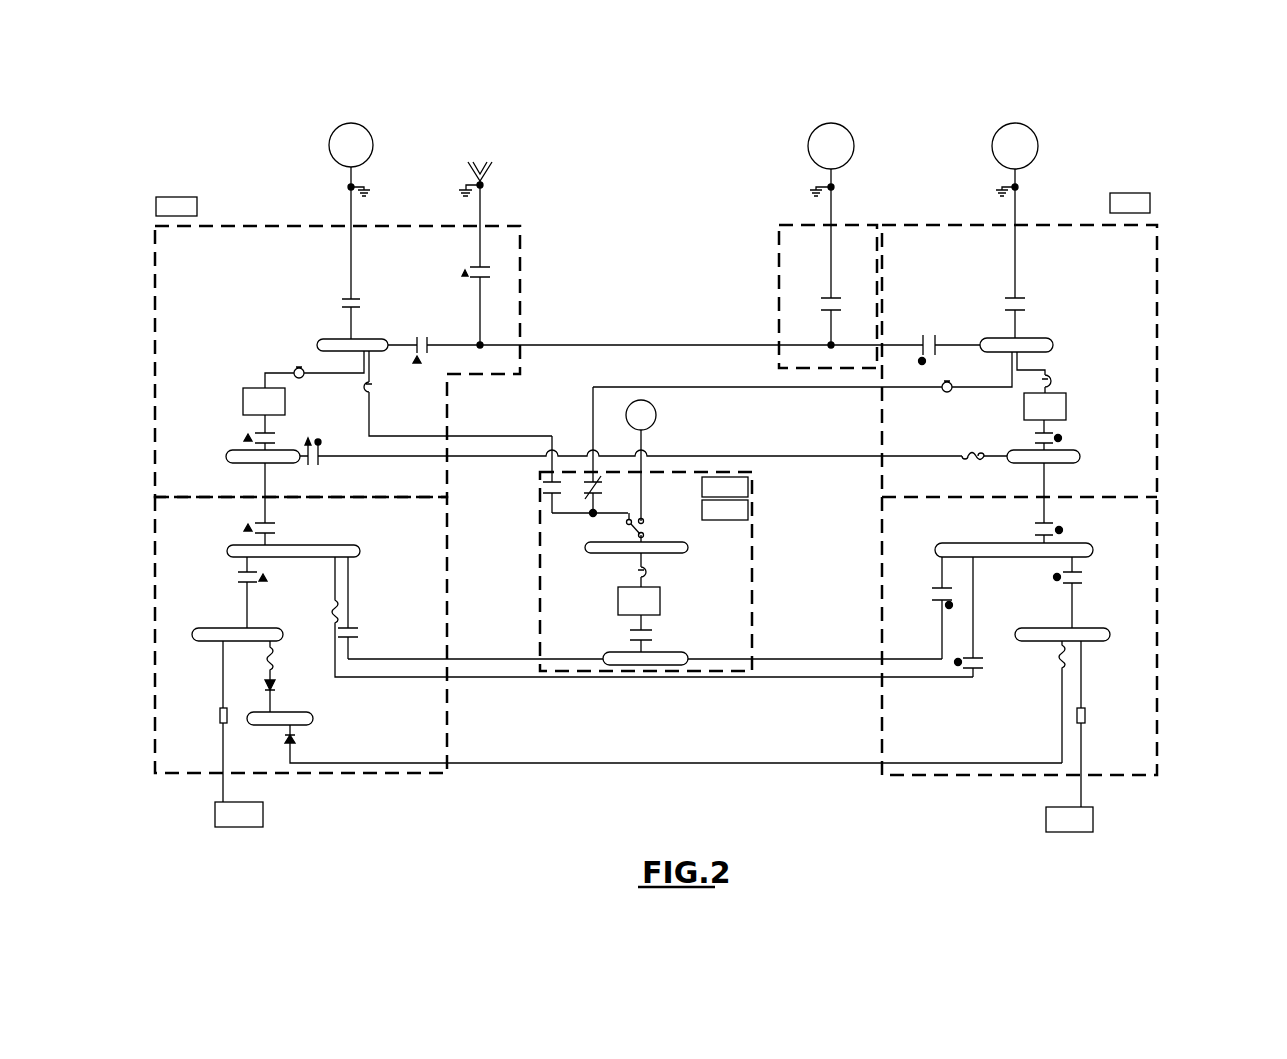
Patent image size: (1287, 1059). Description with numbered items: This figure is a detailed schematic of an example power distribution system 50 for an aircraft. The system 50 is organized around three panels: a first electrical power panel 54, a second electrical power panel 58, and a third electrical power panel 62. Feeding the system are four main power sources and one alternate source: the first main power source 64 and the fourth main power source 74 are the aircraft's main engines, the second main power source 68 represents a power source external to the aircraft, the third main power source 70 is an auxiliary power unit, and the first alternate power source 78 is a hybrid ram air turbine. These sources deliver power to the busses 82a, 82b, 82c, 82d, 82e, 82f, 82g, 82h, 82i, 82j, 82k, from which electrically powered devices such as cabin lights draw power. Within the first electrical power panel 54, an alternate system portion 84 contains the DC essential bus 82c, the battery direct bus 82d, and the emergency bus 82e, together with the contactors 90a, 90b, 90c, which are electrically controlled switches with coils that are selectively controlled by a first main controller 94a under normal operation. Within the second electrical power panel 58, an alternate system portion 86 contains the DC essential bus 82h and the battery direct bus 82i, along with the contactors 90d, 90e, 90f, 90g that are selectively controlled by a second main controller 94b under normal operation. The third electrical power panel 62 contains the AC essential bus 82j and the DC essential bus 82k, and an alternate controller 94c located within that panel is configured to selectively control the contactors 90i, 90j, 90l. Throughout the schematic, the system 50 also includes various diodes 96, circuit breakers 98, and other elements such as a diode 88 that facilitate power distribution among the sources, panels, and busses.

The power distribution system 50 is at (1190, 122).
The first electrical power panel 54 is at (523, 290).
The second electrical power panel 58 is at (778, 292).
The third electrical power panel 62 is at (755, 620).
The first main power source 64 is at (378, 158).
The second main power source 68 is at (498, 175).
The third main power source 70 is at (860, 148).
The fourth main power source 74 is at (1044, 148).
The first alternate power source 78 is at (662, 418).
The bus 82a is at (318, 343).
The bus 82b is at (228, 450).
The DC essential bus 82c is at (230, 548).
The battery direct bus 82d is at (215, 628).
The emergency bus 82e is at (315, 718).
The bus 82f is at (1050, 340).
The bus 82g is at (1073, 455).
The DC essential bus 82h is at (1090, 546).
The battery direct bus 82i is at (1105, 630).
The AC essential bus 82j is at (686, 554).
The DC essential bus 82k is at (682, 668).
The alternate system portion 84 is at (450, 525).
The alternate system portion 86 is at (1160, 540).
The diode 88 is at (298, 740).
The contactor 90a is at (282, 522).
The contactor 90b is at (235, 577).
The contactor 90c is at (360, 633).
The contactor 90d is at (1030, 525).
The contactor 90e is at (932, 590).
The contactor 90f is at (1085, 582).
The contactor 90g is at (987, 663).
The contactor 90i is at (538, 485).
The contactor 90j is at (607, 485).
The contactor 90l is at (630, 635).
The first main controller 94a is at (187, 195).
The second main controller 94b is at (1135, 192).
The alternate controller 94c is at (745, 510).
The diode 96 is at (278, 688).
The circuit breaker 98 is at (362, 392).